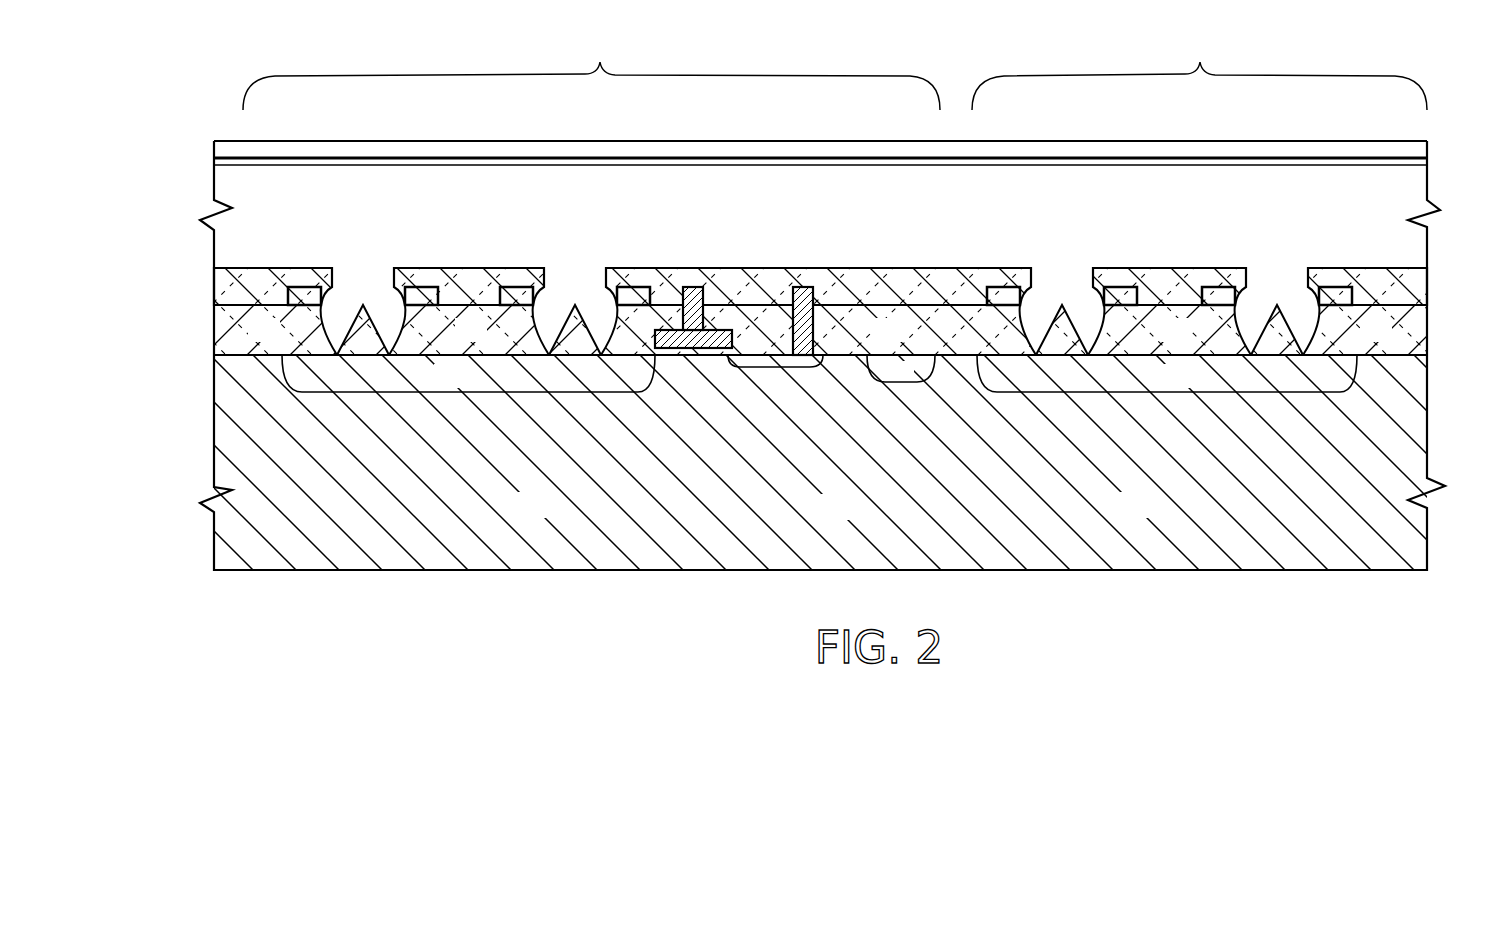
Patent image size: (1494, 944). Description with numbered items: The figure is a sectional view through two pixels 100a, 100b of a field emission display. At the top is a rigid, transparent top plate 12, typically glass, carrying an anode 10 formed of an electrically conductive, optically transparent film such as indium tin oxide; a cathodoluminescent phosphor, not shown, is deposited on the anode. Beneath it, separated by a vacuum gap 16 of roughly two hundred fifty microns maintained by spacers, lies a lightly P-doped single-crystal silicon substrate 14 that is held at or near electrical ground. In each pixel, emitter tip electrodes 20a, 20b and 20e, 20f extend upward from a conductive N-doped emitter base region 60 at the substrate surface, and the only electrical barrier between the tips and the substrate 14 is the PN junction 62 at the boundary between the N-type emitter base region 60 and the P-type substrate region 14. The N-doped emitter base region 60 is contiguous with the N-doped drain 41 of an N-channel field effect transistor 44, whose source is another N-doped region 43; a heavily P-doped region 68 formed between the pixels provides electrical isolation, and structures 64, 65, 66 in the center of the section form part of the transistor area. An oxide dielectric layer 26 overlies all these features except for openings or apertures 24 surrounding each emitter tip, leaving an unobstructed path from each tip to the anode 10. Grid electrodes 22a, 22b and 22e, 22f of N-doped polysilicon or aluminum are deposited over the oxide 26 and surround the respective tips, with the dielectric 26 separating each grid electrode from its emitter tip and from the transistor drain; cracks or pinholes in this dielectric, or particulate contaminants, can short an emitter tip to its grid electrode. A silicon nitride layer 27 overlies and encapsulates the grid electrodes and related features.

The anode 10 is at (222, 162).
The top plate 12 is at (226, 150).
The substrate 14 is at (826, 524).
The gap region 16 is at (770, 199).
The emitter tip electrode 20a is at (367, 303).
The emitter tip electrode 20b is at (579, 303).
The emitter tip electrode 20e is at (1066, 303).
The emitter tip electrode 20f is at (1281, 303).
The grid electrode 22a is at (318, 290).
The grid electrode 22b is at (530, 290).
The grid electrode 22e is at (1017, 290).
The grid electrode 22f is at (1232, 290).
The aperture 24 is at (343, 322).
The dielectric layer 26 is at (251, 345).
The silicon nitride layer 27 is at (230, 290).
The drain 41 is at (638, 363).
The source 43 is at (782, 365).
The transistor 44 is at (700, 366).
The emitter base region 60 is at (362, 380).
The PN junction 62 is at (468, 392).
The contact plug 64 is at (690, 287).
The buried contact 65 is at (713, 328).
The contact via 66 is at (800, 287).
The heavily P-doped region 68 is at (900, 383).
The first device region 100a is at (591, 74).
The second device region 100b is at (1199, 74).